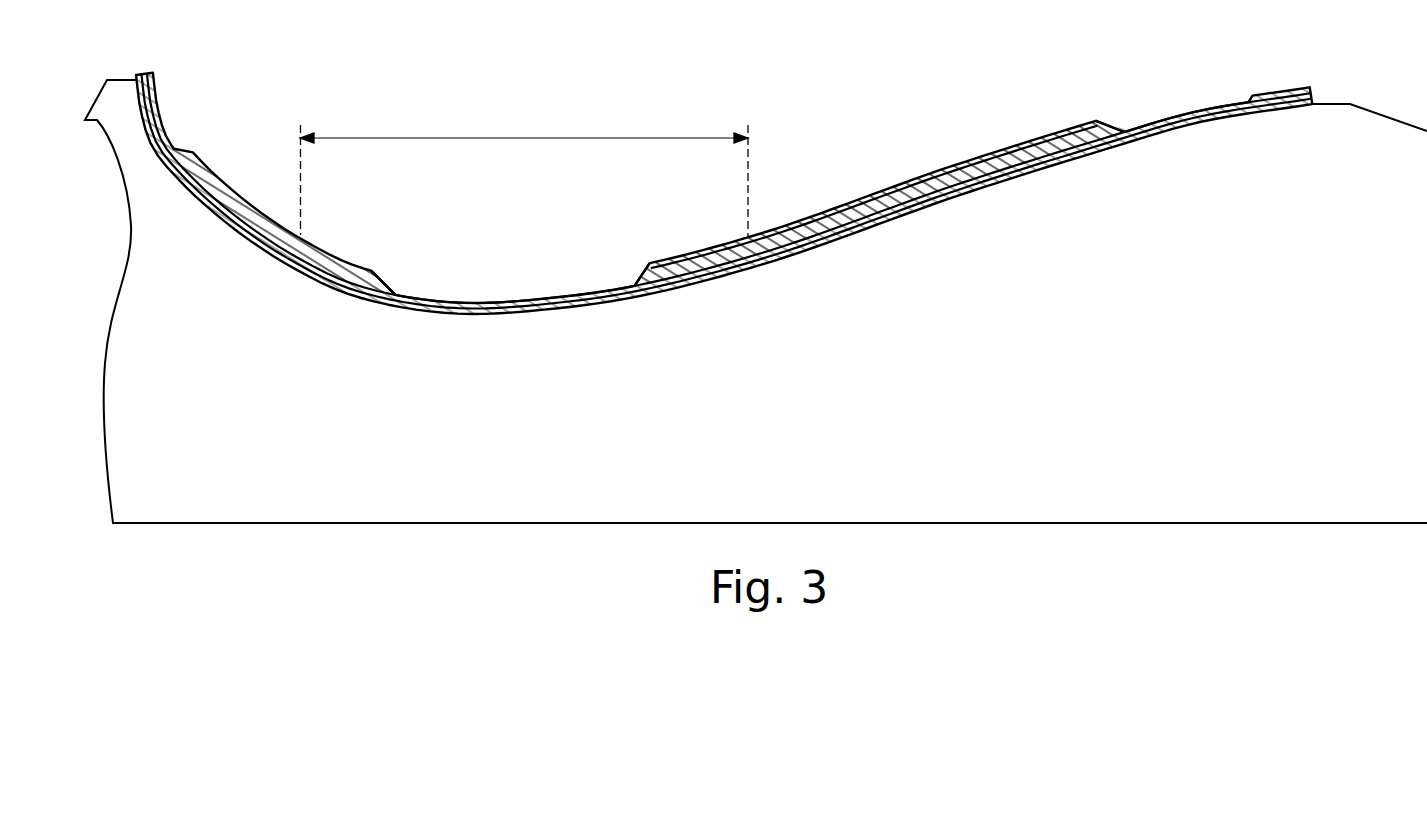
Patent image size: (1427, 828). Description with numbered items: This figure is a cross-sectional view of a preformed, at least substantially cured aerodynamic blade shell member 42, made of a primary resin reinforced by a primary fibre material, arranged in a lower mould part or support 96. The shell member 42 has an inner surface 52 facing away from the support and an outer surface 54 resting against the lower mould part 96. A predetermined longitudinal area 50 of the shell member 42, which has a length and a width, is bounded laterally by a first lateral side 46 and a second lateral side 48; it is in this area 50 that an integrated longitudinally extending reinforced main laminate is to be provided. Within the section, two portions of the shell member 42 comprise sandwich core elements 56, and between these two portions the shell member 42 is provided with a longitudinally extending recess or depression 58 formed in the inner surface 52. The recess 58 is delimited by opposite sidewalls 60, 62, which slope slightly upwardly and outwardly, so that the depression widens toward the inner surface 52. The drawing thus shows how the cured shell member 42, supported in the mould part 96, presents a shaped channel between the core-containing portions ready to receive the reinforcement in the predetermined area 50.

The aerodynamic blade shell member 42 is at (842, 204).
The first lateral side 46 is at (748, 237).
The second lateral side 48 is at (300, 233).
The predetermined longitudinal area 50 is at (524, 128).
The inner surface 52 is at (1047, 130).
The outer surface 54 is at (1097, 157).
The sandwich core elements 56 is at (237, 217).
The recess 58 is at (512, 300).
The sidewall 60 is at (648, 287).
The sidewall 62 is at (393, 282).
The lower mould part 96 is at (756, 301).